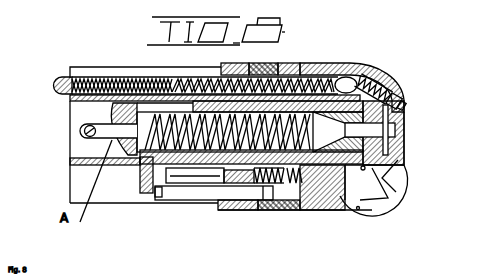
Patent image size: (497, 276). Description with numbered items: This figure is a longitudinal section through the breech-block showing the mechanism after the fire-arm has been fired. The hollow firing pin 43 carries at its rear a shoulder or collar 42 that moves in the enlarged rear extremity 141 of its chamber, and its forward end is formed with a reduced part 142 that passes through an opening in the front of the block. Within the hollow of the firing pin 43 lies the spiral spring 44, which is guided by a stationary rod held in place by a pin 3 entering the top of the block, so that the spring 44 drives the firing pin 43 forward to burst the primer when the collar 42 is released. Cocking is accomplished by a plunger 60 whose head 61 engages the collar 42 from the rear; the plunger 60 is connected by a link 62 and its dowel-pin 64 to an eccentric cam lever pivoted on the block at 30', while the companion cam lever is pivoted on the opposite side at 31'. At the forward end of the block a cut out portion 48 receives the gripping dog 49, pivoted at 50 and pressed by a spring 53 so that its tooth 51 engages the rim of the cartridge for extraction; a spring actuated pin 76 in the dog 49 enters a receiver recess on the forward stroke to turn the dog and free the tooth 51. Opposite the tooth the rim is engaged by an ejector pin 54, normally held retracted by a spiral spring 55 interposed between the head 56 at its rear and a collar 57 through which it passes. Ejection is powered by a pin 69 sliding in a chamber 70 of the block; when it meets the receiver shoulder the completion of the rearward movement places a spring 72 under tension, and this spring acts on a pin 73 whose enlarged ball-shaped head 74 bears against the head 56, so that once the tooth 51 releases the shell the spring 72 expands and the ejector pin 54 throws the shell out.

The pin 69 is at (58, 78).
The chamber 70 is at (190, 78).
The spring 72 is at (198, 80).
The cam lever pivot 30' is at (253, 60).
The pin 73 is at (300, 78).
The ball-shaped head 74 is at (334, 66).
The head 56 is at (361, 66).
The spiral spring 55 is at (375, 83).
The collar 57 is at (394, 94).
The ejector pin 54 is at (401, 101).
The reduced part 142 is at (394, 128).
The pivot 50 is at (403, 148).
The tooth 51 is at (398, 168).
The gripping dog 49 is at (401, 186).
The cut out portion 48 is at (384, 195).
The spring actuated pin 76 is at (361, 209).
The spring 53 is at (340, 212).
The cam lever pivot 31' is at (259, 236).
The link 62 is at (236, 205).
The plunger 60 is at (208, 170).
The dowel-pin 64 is at (186, 140).
The spiral spring 44 is at (207, 132).
The head 61 is at (141, 180).
The firing pin 43 is at (113, 130).
The enlarged rear extremity of chamber 141 is at (133, 166).
The collar 42 is at (113, 108).
The pin 3 is at (83, 131).